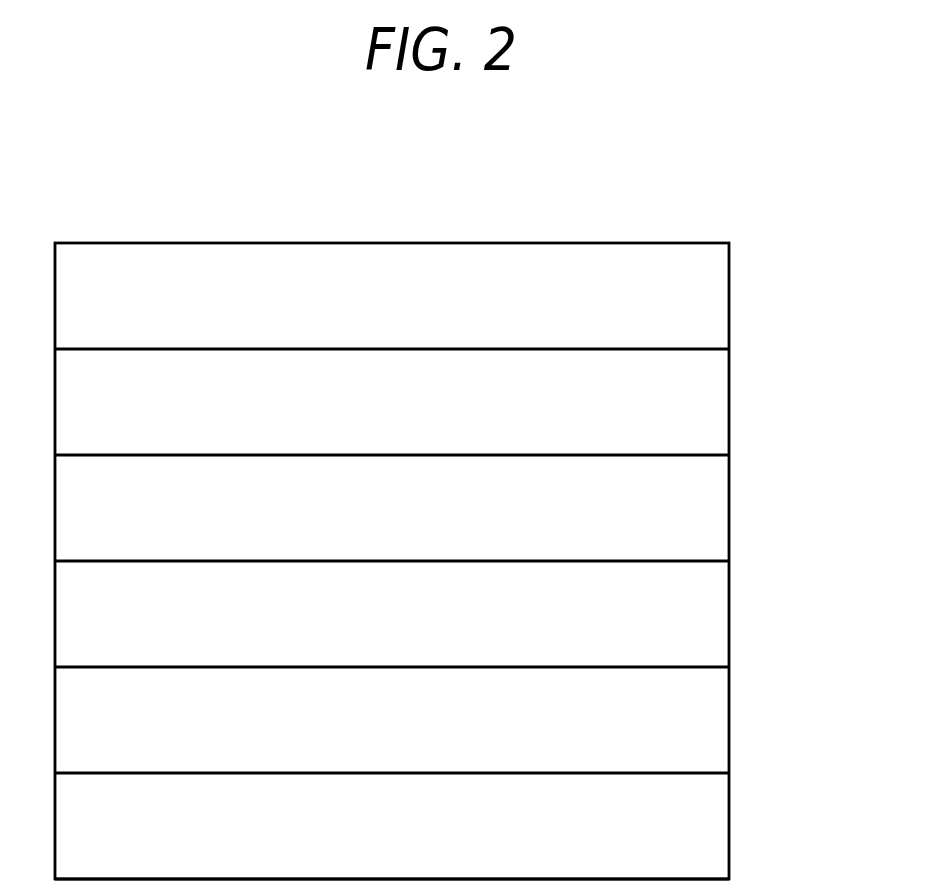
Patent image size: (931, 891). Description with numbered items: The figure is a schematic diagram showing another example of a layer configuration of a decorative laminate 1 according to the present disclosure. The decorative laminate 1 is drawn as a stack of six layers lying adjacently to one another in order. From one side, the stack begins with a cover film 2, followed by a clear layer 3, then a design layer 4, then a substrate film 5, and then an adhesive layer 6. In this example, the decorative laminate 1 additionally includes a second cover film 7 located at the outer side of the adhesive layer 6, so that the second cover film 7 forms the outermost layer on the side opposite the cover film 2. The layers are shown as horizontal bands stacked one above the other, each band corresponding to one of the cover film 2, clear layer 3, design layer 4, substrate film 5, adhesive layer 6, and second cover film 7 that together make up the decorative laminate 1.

The decorative laminate 1 is at (712, 212).
The cover film 2 is at (700, 306).
The clear layer 3 is at (700, 416).
The design layer 4 is at (700, 522).
The substrate film 5 is at (700, 628).
The adhesive layer 6 is at (700, 732).
The second cover film 7 is at (700, 836).